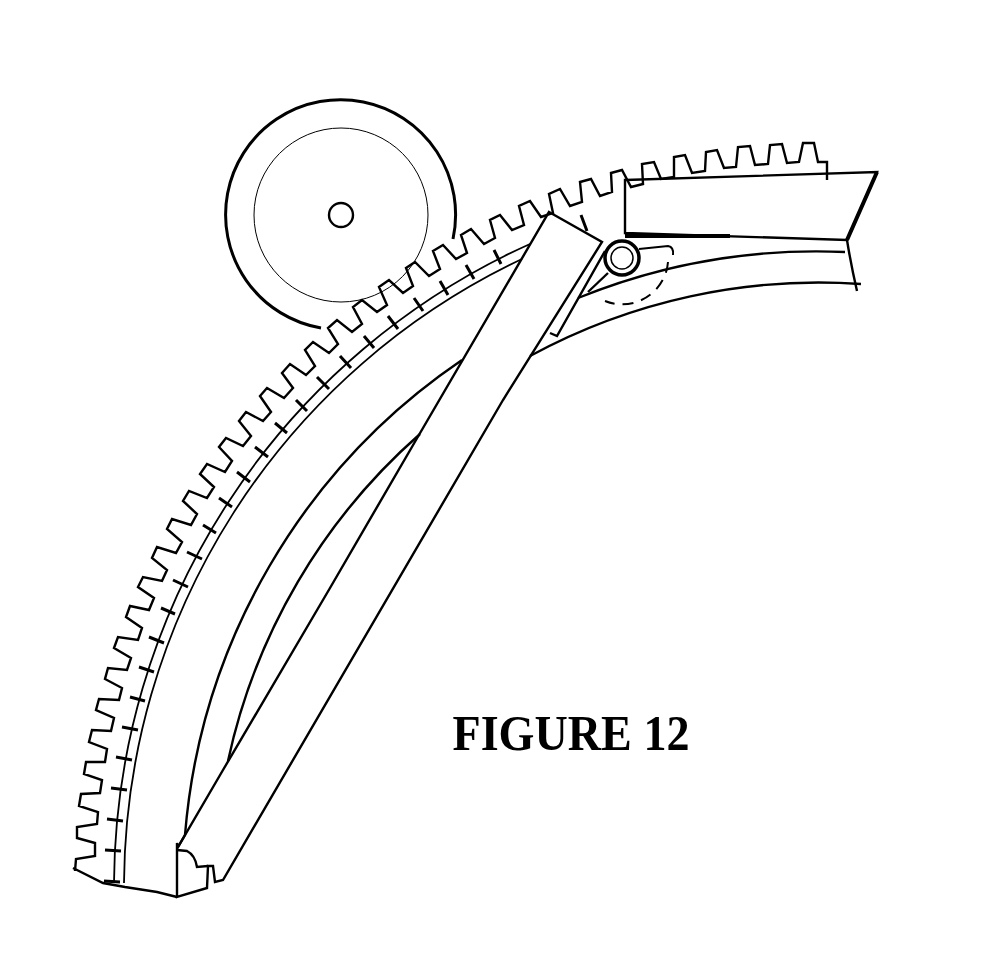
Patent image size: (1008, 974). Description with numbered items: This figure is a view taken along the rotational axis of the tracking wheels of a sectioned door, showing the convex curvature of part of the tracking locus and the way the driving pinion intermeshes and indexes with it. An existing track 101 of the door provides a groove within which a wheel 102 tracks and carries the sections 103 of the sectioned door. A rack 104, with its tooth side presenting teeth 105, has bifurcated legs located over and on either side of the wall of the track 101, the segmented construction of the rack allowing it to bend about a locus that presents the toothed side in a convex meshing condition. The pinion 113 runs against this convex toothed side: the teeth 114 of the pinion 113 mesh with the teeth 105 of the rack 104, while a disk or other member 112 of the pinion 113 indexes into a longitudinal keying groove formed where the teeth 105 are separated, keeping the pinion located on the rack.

The track 101 is at (166, 788).
The wheel 102 is at (668, 249).
The sections 103 is at (778, 208).
The rack 104 is at (265, 435).
The teeth 105 is at (500, 211).
The disk 112 is at (416, 185).
The pinion 113 is at (345, 173).
The teeth of the pinion 114 is at (262, 257).